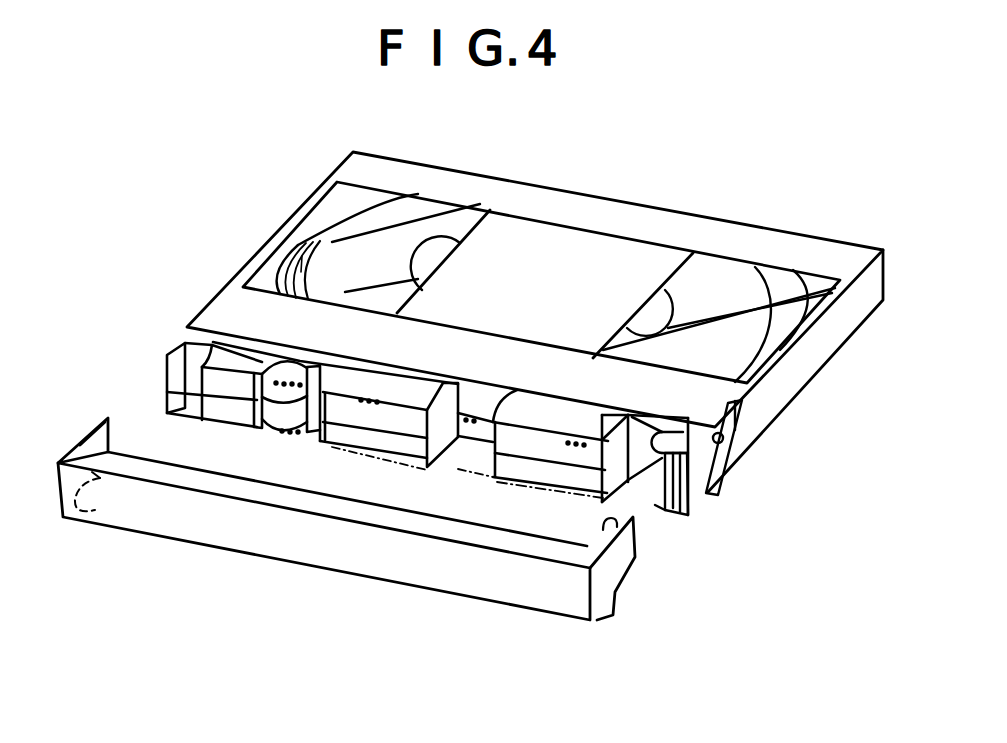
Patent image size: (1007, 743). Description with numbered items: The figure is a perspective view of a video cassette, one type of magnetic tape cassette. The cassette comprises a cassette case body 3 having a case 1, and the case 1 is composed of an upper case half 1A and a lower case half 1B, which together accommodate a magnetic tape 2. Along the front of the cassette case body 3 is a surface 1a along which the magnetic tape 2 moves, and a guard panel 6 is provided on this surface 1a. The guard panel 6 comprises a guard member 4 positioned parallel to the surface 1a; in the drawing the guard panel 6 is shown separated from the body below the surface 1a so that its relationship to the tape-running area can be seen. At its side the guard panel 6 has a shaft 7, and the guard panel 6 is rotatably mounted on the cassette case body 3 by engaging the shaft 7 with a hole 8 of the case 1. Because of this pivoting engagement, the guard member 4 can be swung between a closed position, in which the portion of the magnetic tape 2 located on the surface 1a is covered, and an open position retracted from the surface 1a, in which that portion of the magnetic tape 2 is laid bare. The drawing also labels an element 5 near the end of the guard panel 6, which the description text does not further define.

The case 1 is at (402, 402).
The upper case half 1A is at (183, 347).
The lower case half 1B is at (180, 400).
The surface 1a is at (410, 423).
The magnetic tape 2 is at (650, 488).
The cassette case body 3 is at (730, 206).
The guard member 4 is at (458, 572).
The pin 5 is at (76, 520).
The guard panel 6 is at (346, 525).
The shaft 7 is at (604, 526).
The hole 8 is at (723, 443).